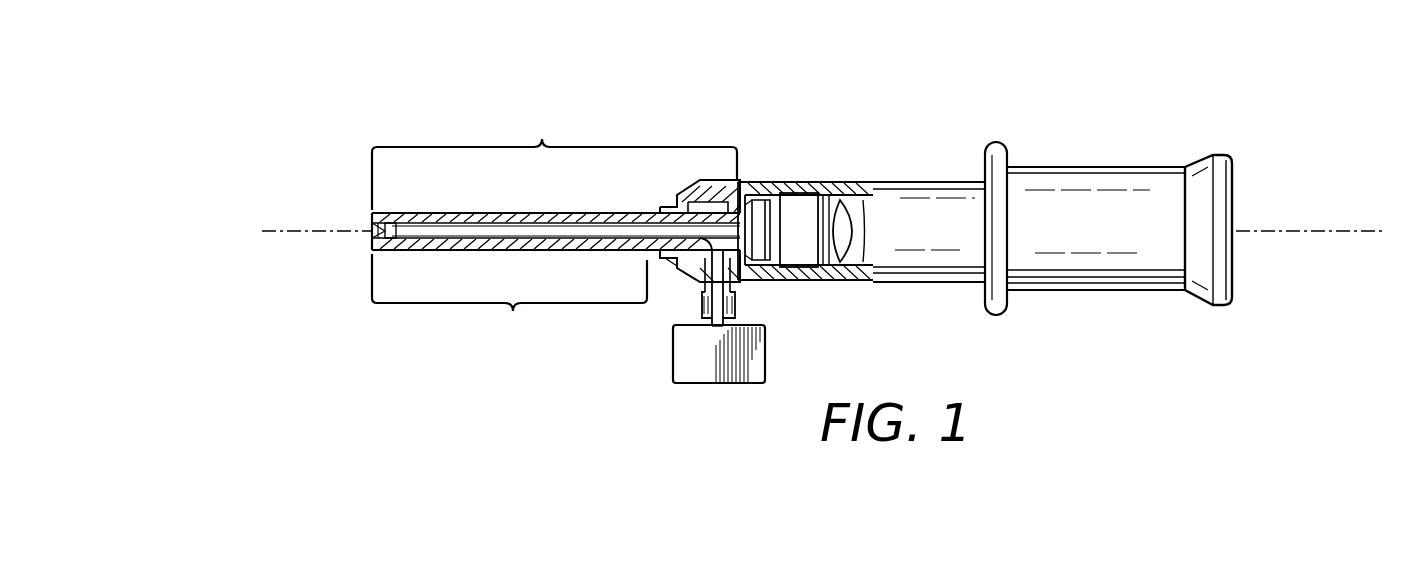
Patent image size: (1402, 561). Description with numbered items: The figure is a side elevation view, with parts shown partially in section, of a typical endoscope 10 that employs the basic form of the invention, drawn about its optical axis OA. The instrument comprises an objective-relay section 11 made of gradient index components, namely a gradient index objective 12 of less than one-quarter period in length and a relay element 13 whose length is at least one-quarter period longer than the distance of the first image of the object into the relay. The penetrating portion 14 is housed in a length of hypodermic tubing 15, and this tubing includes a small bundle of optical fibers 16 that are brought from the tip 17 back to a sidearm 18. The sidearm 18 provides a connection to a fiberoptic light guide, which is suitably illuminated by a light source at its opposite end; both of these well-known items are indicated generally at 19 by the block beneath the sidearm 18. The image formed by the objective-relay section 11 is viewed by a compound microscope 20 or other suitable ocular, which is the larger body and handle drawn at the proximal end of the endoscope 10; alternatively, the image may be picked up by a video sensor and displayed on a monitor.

The endoscope 10 is at (806, 79).
The objective-relay section 11 is at (554, 161).
The gradient index objective 12 is at (391, 238).
The relay element 13 is at (488, 228).
The penetrating portion 14 is at (509, 296).
The hypodermic tubing 15 is at (484, 252).
The bundle of optical fibers 16 is at (557, 213).
The tip 17 is at (366, 236).
The sidearm 18 is at (700, 305).
The fiberoptic light guide and light source 19 is at (698, 382).
The compound microscope 20 is at (868, 291).
The optical axis OA is at (809, 232).